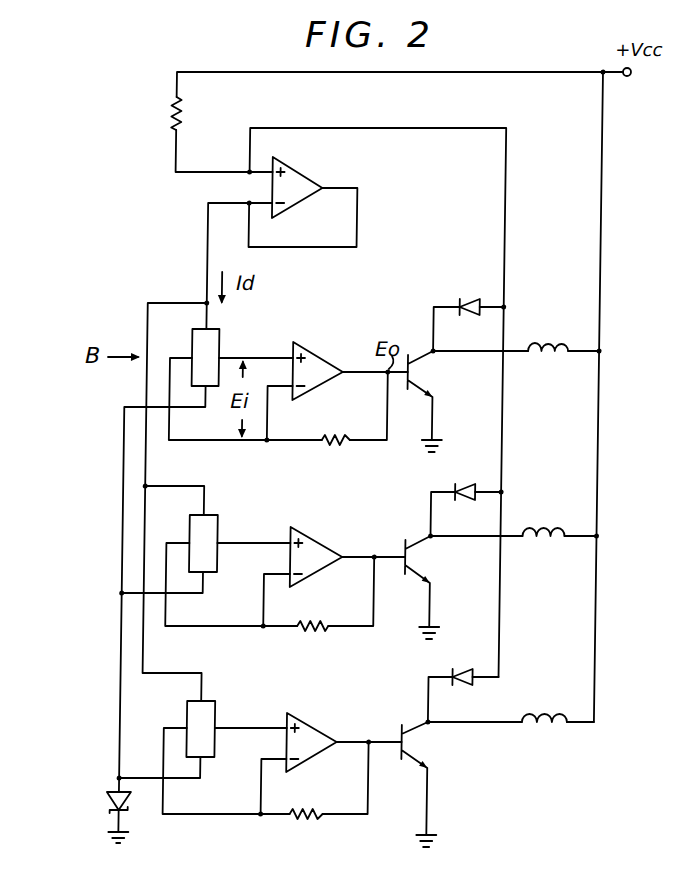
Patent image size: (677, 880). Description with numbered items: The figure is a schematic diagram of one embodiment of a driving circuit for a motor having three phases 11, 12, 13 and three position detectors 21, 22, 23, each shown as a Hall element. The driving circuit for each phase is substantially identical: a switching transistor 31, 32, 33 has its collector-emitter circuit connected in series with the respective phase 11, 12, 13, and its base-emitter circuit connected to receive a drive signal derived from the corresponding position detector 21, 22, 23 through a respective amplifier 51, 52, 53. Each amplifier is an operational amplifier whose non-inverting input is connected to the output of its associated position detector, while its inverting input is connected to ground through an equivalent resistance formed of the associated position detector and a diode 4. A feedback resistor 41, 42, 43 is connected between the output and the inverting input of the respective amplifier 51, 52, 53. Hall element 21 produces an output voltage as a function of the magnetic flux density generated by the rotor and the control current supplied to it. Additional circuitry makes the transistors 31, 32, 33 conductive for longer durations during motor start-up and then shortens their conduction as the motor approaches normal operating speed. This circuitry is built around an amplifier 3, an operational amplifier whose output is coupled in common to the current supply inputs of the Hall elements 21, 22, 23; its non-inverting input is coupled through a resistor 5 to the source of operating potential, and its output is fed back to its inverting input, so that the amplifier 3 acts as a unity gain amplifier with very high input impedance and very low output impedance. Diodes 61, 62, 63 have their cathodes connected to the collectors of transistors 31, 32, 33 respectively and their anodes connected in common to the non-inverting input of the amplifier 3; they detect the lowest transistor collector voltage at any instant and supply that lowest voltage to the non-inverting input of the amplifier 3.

The resistor 5 is at (177, 114).
The amplifier 3 is at (303, 200).
The position detector 21 is at (225, 341).
The position detector 22 is at (218, 526).
The position detector 23 is at (215, 707).
The amplifier 51 is at (325, 389).
The amplifier 52 is at (326, 578).
The amplifier 53 is at (325, 762).
The feedback resistor 41 is at (343, 445).
The feedback resistor 42 is at (322, 631).
The feedback resistor 43 is at (312, 818).
The transistor 31 is at (414, 390).
The transistor 32 is at (411, 574).
The transistor 33 is at (409, 760).
The diode 61 is at (488, 300).
The diode 62 is at (475, 484).
The diode 63 is at (472, 670).
The phase 11 is at (552, 340).
The phase 12 is at (555, 531).
The phase 13 is at (556, 716).
The diode 4 is at (118, 794).